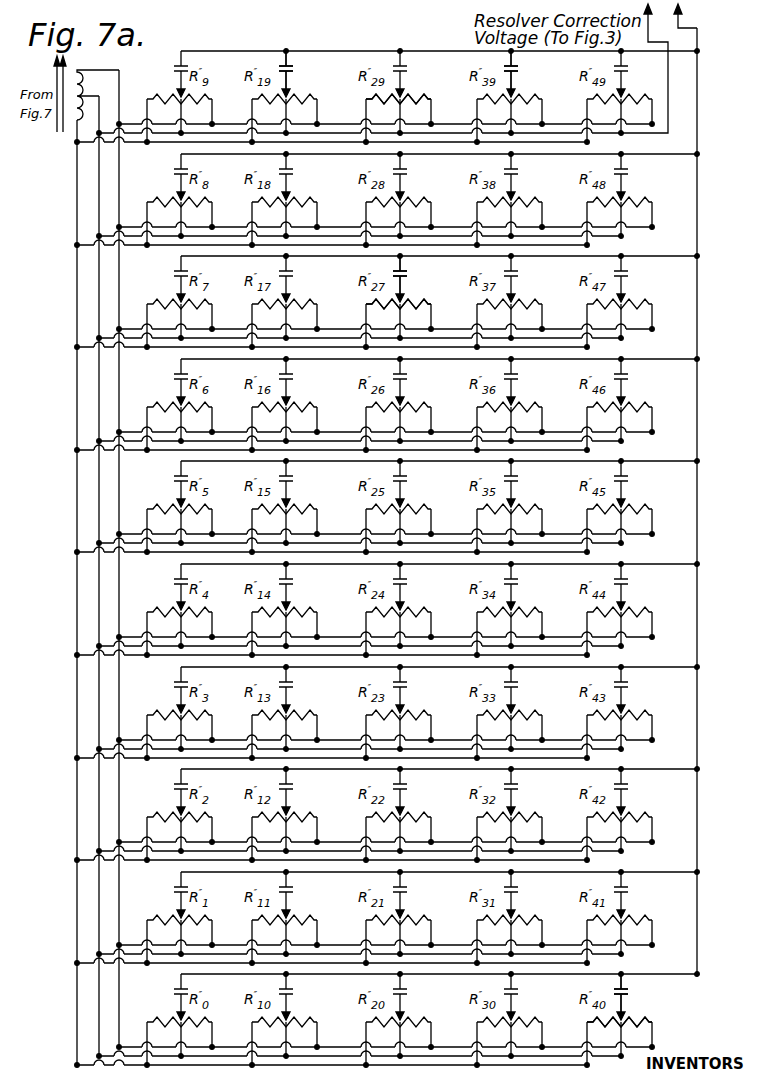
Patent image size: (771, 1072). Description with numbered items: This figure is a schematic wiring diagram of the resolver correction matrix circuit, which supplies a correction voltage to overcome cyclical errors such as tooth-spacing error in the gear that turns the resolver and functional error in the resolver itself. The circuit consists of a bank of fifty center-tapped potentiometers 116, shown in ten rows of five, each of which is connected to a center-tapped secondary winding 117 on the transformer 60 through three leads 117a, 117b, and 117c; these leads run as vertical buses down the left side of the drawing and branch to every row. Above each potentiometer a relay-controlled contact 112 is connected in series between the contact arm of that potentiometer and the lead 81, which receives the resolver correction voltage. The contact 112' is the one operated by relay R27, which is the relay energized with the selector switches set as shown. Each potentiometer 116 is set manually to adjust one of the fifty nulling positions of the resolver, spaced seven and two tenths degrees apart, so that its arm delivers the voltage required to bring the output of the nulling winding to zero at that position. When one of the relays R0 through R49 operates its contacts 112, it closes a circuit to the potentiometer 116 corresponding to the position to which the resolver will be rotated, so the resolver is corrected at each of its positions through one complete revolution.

The transformer 60 is at (56, 130).
The lead 81 is at (682, 20).
The relay controlled contacts 112 is at (472, 532).
The contact 112' is at (419, 276).
The center-tapped potentiometers 116 is at (406, 96).
The center-tapped secondary winding 117 is at (83, 86).
The lead 117a is at (77, 831).
The lead 117b is at (119, 925).
The lead 117c is at (99, 1030).